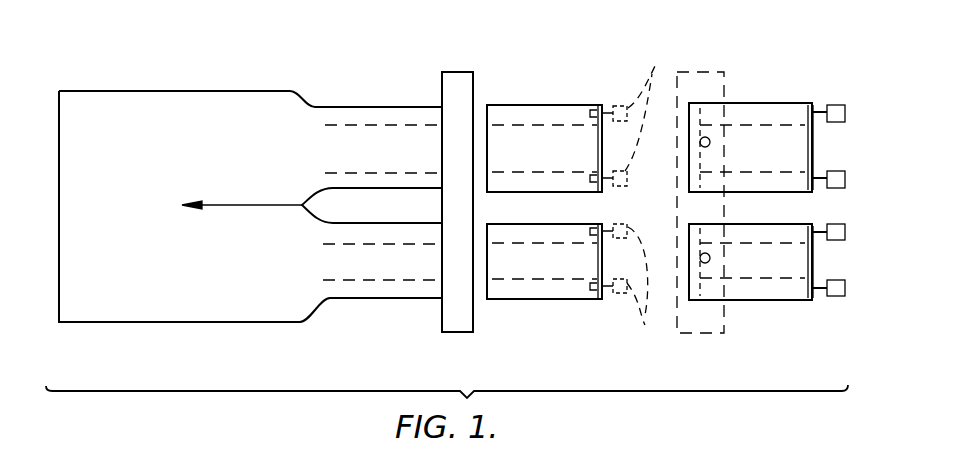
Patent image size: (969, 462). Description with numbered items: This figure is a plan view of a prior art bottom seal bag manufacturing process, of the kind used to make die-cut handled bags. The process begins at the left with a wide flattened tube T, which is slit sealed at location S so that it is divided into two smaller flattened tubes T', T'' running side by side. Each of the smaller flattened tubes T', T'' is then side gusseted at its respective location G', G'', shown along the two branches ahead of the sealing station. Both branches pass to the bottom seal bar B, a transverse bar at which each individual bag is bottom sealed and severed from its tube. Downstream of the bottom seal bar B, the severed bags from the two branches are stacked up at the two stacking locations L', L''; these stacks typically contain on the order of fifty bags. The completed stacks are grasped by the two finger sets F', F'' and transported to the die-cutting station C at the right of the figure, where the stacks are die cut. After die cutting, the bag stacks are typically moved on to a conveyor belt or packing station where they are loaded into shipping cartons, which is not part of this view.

The flattened tube T is at (250, 184).
The slit seal location S is at (187, 197).
The smaller flattened tube T' is at (357, 134).
The smaller flattened tube T'' is at (348, 325).
The side gusseting location G' is at (381, 112).
The side gusseting location G'' is at (379, 296).
The bottom seal bar B is at (457, 90).
The stacking location L' is at (557, 119).
The stacking location L'' is at (557, 288).
The finger set F' is at (651, 108).
The finger set F'' is at (649, 283).
The die-cutting station C is at (707, 87).